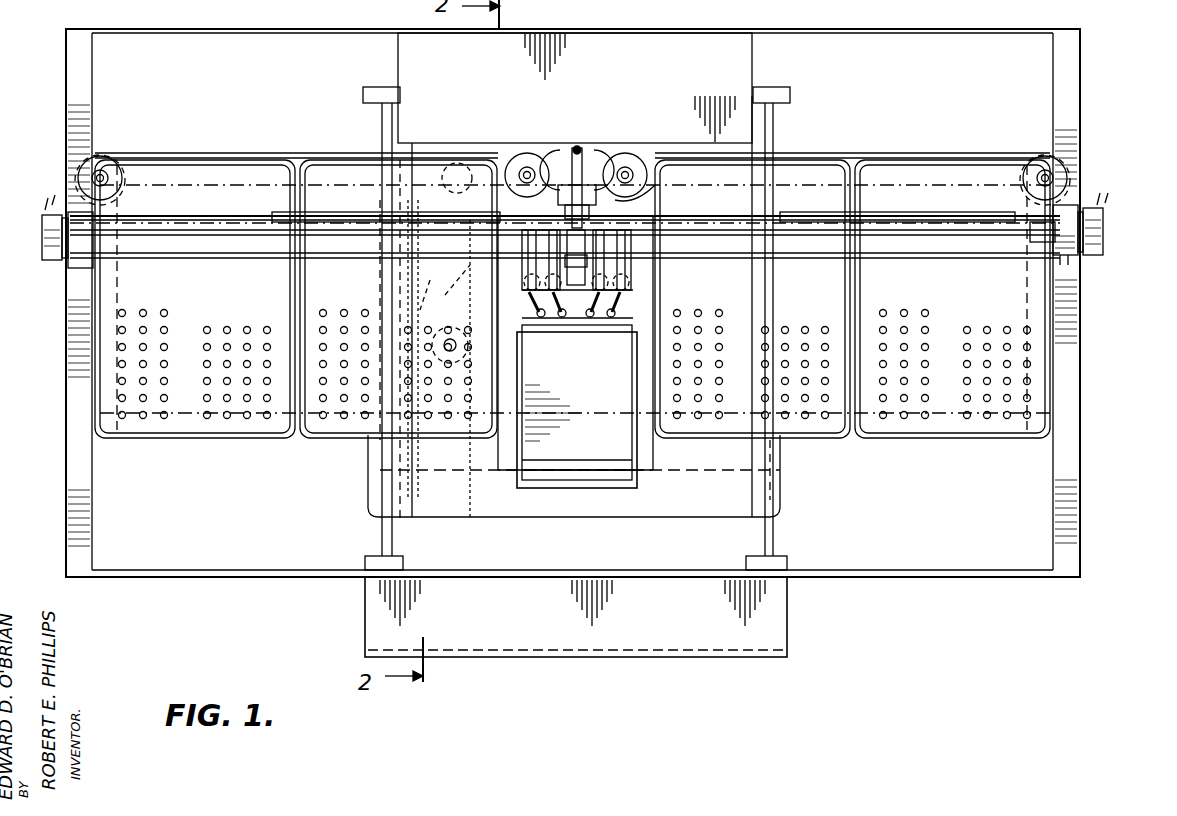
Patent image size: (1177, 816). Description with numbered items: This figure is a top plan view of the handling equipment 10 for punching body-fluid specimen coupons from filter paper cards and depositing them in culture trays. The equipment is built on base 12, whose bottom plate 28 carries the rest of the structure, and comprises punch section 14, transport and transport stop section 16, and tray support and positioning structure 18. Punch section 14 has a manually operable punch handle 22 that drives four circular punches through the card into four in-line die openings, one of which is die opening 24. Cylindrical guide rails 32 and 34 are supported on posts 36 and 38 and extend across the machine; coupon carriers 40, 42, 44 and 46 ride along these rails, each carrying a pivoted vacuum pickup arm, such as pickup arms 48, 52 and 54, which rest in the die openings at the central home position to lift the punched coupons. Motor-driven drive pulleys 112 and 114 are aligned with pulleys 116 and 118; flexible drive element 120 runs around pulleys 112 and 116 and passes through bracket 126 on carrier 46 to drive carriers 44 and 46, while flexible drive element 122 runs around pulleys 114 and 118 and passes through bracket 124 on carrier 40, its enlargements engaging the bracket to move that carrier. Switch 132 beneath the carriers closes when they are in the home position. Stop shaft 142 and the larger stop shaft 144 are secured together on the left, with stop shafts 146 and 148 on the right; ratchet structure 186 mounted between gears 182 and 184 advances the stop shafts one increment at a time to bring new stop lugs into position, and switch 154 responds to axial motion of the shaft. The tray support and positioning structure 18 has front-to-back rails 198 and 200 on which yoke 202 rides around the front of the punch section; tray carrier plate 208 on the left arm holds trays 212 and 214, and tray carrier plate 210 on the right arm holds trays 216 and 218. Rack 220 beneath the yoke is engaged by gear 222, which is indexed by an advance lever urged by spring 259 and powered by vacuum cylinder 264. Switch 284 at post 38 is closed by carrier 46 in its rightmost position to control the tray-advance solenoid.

The handling equipment 10 is at (862, 612).
The base 12 is at (630, 662).
The punch section 14 is at (628, 483).
The transport and transport stop section 16 is at (465, 150).
The tray support and positioning structure 18 is at (360, 475).
The punch handle 22 is at (550, 500).
The die opening 24 is at (535, 320).
The bottom plate 28 is at (908, 540).
The guide rail 32 is at (140, 260).
The guide rail 34 is at (205, 230).
The post 36 is at (75, 270).
The post 38 is at (1068, 262).
The coupon carrier 40 is at (520, 265).
The coupon carrier 42 is at (577, 285).
The coupon carrier 44 is at (606, 320).
The coupon carrier 46 is at (632, 262).
The pickup arm 48 is at (525, 305).
The pickup arm 52 is at (40, 262).
The pickup arm 54 is at (615, 305).
The drive pulley 112 is at (515, 168).
The drive pulley 114 is at (628, 168).
The pulley 116 is at (1040, 165).
The pulley 118 is at (103, 170).
The flexible drive element 120 is at (815, 153).
The flexible drive element 122 is at (205, 153).
The bracket 124 is at (450, 192).
The bracket 126 is at (656, 187).
The switch 132 is at (595, 335).
The stop shaft 142 is at (190, 216).
The stop shaft 144 is at (362, 208).
The stop shaft 146 is at (735, 260).
The stop shaft 148 is at (935, 222).
The switch 154 is at (1103, 236).
The gear 182 is at (555, 155).
The gear 184 is at (590, 158).
The ratchet structure 186 is at (580, 152).
The rail 198 is at (380, 540).
The rail 200 is at (775, 540).
The yoke 202 is at (604, 495).
The tray carrier plate 208 is at (295, 440).
The tray carrier plate 210 is at (852, 435).
The tray 212 is at (188, 440).
The tray 214 is at (355, 440).
The tray 216 is at (793, 420).
The tray 218 is at (942, 420).
The rack 220 is at (470, 450).
The gear 222 is at (445, 322).
The spring 259 is at (427, 533).
The cylinder 264 is at (410, 270).
The switch 284 is at (1030, 235).